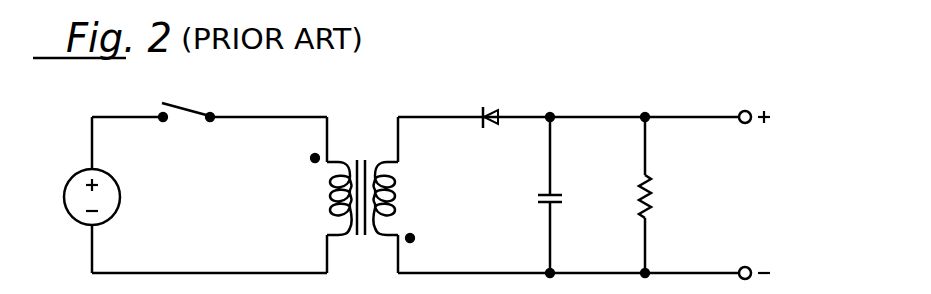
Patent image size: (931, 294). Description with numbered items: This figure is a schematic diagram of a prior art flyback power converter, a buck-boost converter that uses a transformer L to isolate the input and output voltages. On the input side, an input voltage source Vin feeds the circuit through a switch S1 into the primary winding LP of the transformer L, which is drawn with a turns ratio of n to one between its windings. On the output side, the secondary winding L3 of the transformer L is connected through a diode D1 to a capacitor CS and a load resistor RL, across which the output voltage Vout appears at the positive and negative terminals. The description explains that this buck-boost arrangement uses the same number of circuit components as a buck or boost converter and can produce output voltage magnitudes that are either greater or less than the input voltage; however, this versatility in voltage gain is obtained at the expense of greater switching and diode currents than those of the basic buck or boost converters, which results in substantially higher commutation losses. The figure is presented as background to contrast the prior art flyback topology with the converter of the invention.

The input voltage source Vin is at (112, 197).
The switch S1 is at (187, 131).
The transformer primary winding LP is at (320, 195).
The transformer L is at (362, 215).
The transformer secondary winding L3 is at (407, 202).
The rectifier diode D1 is at (484, 99).
The smoothing capacitor CS is at (533, 195).
The load resistor RL is at (662, 195).
The output voltage terminals Vout is at (786, 195).